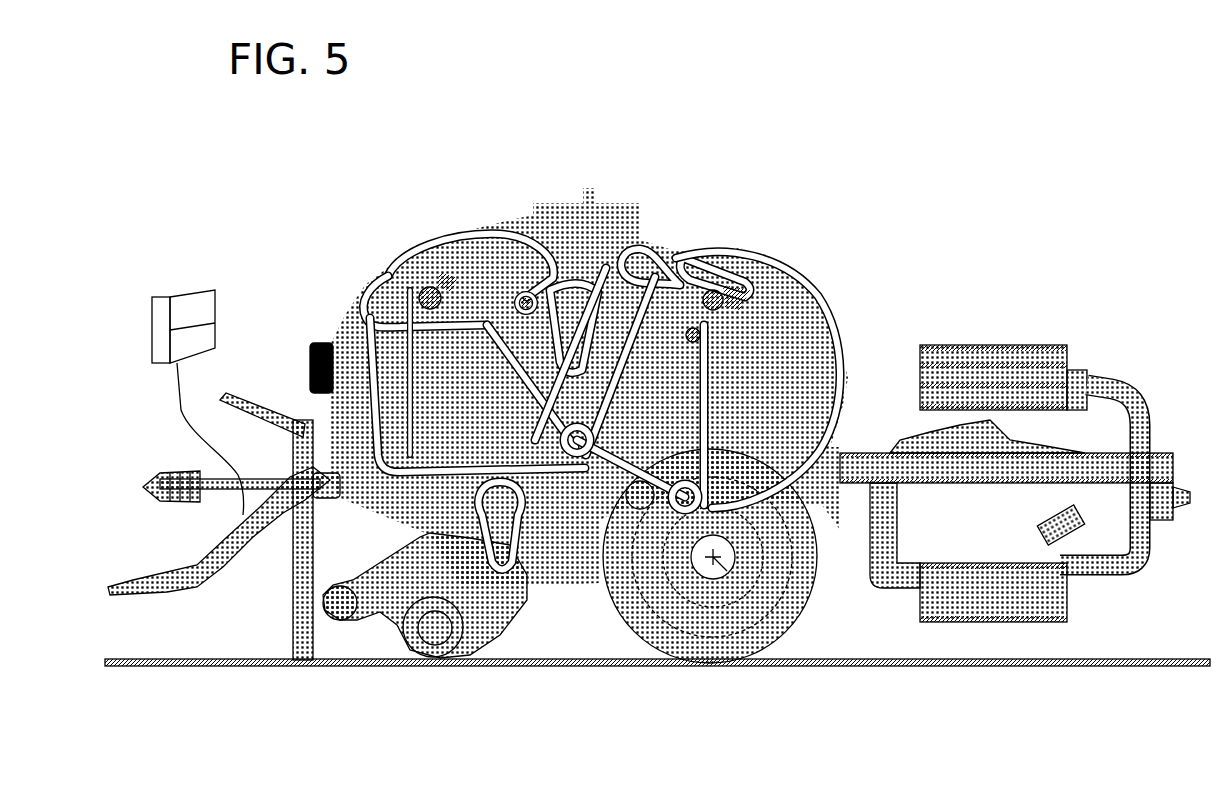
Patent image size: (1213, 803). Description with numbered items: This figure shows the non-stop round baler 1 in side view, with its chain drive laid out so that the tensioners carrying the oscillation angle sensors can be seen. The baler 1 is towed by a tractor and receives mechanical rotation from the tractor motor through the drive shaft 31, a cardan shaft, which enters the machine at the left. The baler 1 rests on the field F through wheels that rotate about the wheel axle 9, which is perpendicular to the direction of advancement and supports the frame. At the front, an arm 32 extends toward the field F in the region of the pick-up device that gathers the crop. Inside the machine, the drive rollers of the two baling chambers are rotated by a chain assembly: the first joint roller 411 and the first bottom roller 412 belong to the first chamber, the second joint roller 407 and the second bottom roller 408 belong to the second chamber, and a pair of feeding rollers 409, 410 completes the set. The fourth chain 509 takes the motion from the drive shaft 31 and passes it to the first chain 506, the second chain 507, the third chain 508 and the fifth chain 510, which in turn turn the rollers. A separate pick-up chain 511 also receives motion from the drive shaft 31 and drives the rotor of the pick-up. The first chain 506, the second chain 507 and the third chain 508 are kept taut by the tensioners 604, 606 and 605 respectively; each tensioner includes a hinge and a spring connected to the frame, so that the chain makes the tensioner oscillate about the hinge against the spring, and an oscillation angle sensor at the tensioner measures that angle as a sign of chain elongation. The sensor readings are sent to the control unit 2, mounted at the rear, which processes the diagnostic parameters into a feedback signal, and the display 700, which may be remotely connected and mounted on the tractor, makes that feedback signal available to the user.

The baler 1 is at (727, 210).
The control unit 2 is at (1045, 335).
The wheel axle 9 is at (718, 562).
The drive shaft 31 is at (182, 480).
The arm 32 is at (197, 590).
The field F is at (243, 665).
The second joint roller 407 is at (683, 235).
The second bottom roller 408 is at (790, 560).
The feeding roller 409 is at (593, 458).
The feeding roller 410 is at (640, 498).
The first joint roller 411 is at (375, 228).
The first bottom roller 412 is at (478, 228).
The first chain 506 is at (790, 285).
The second chain 507 is at (652, 240).
The third chain 508 is at (514, 232).
The fourth chain 509 is at (347, 323).
The fifth chain 510 is at (672, 497).
The pick-up chain 511 is at (525, 520).
The tensioner 604 is at (737, 330).
The tensioner 605 is at (440, 228).
The tensioner 606 is at (560, 455).
The display 700 is at (187, 313).